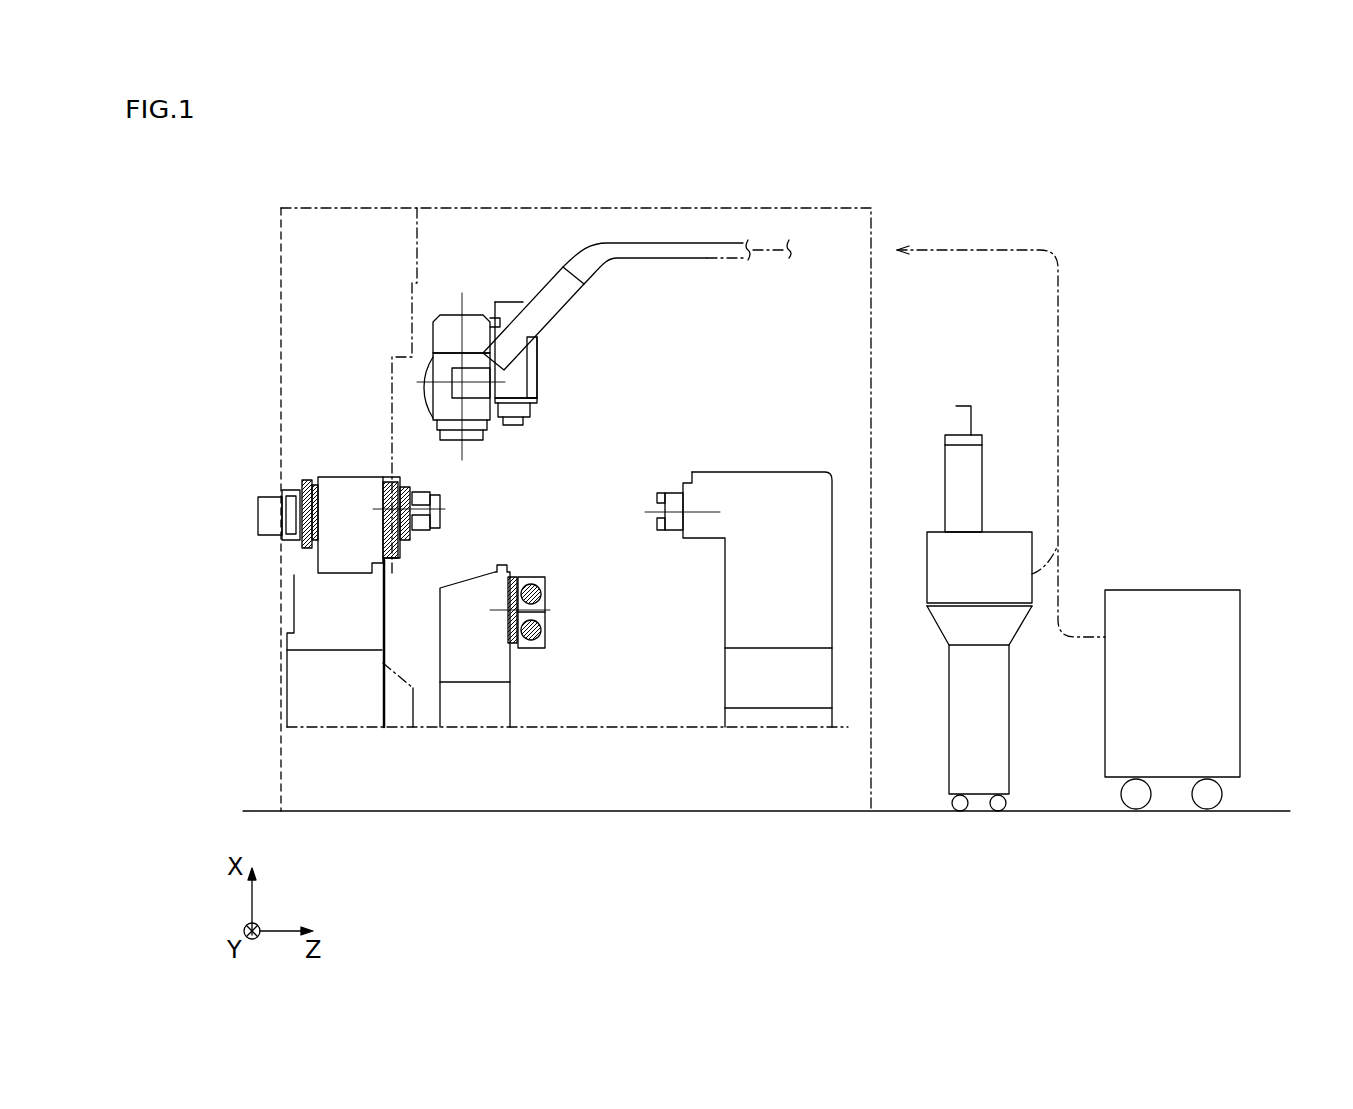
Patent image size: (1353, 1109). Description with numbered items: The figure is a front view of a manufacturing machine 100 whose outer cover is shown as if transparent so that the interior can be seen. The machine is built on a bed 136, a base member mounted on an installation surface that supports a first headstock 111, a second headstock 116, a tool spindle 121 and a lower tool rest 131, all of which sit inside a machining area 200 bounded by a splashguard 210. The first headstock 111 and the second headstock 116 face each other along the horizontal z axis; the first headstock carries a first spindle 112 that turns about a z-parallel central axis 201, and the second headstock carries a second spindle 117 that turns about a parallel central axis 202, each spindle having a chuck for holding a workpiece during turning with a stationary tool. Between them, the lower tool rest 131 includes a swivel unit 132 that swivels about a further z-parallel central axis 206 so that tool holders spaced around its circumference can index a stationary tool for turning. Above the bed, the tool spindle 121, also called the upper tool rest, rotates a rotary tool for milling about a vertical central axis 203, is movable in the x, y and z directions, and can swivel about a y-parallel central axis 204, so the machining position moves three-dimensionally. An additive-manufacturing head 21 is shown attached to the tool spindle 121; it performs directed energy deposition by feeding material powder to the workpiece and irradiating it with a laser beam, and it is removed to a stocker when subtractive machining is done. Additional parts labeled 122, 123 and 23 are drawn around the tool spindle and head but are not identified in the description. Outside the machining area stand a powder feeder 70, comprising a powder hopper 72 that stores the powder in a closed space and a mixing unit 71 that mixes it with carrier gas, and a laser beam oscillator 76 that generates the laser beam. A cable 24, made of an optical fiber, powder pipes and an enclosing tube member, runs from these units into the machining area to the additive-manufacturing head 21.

The manufacturing machine 100 is at (266, 175).
The tool spindle 121 is at (424, 336).
The head body 122 is at (443, 393).
The nozzle 123 is at (467, 440).
The additive-manufacturing head 21 is at (521, 380).
The welding torch 23 is at (548, 283).
The cable 24 is at (690, 245).
The machining area 200 is at (638, 316).
The central axis 203 is at (448, 315).
The central axis 204 is at (464, 393).
The splashguard 210 is at (547, 208).
The first headstock 111 is at (324, 465).
The first spindle 112 is at (418, 497).
The central axis 201 is at (373, 512).
The lower tool rest 131 is at (431, 653).
The swivel unit 132 is at (528, 648).
The central axis 206 is at (497, 610).
The bed 136 is at (310, 775).
The second headstock 116 is at (719, 618).
The second spindle 117 is at (674, 522).
The central axis 202 is at (707, 512).
The powder feeder 70 is at (916, 553).
The mixing unit 71 is at (945, 594).
The powder hopper 72 is at (956, 466).
The laser beam oscillator 76 is at (1113, 737).